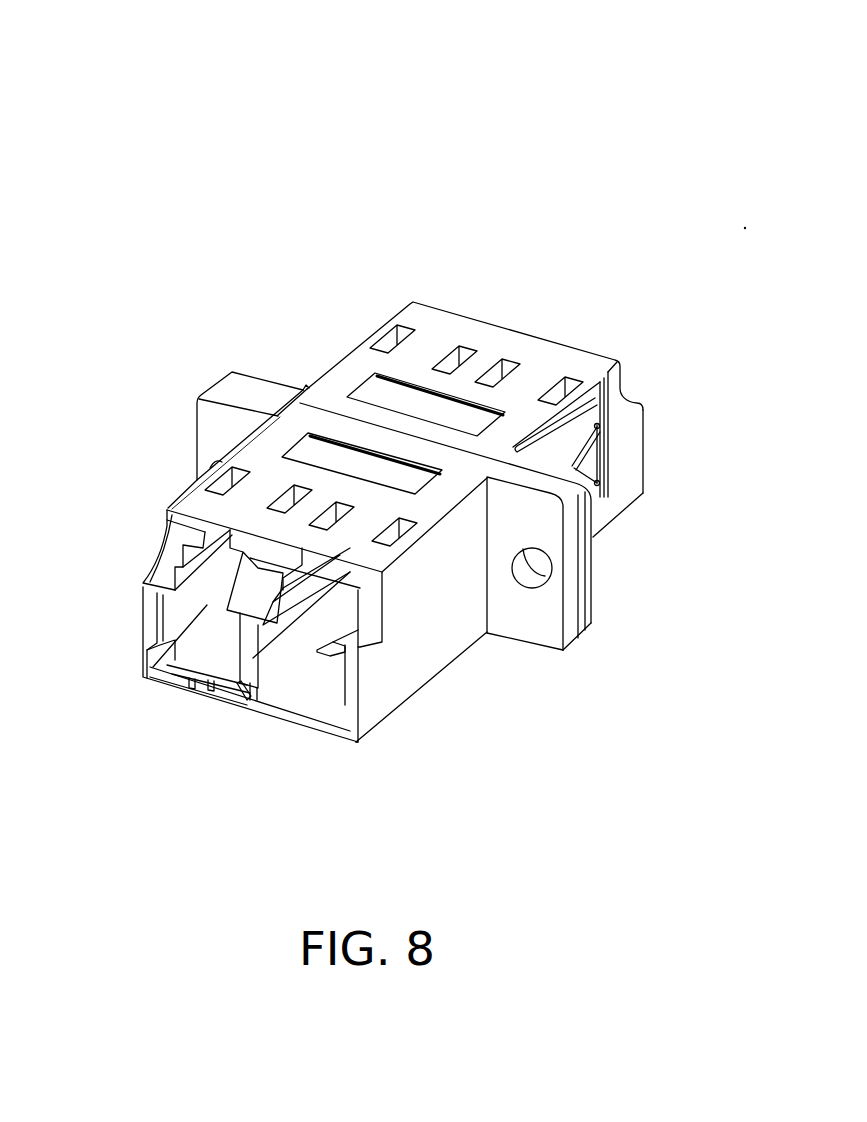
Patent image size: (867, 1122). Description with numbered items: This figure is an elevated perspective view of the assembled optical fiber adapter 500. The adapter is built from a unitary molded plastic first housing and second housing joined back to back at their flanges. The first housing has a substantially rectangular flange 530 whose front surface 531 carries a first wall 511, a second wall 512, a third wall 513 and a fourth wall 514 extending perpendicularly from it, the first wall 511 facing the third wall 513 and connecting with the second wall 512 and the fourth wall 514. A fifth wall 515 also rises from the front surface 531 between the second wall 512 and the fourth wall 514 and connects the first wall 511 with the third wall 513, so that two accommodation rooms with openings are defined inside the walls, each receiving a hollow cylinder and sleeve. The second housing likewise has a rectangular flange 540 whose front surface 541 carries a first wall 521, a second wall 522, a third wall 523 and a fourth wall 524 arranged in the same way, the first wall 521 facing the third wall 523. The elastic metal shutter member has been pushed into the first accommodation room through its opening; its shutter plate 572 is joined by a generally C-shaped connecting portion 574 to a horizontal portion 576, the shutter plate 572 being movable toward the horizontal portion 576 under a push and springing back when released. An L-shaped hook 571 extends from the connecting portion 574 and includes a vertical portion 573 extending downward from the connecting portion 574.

The optical fiber adapter 500 is at (116, 129).
The first wall 511 is at (258, 457).
The second wall 512 is at (148, 600).
The third wall 513 is at (248, 707).
The fourth wall 514 is at (393, 685).
The fifth wall 515 is at (250, 638).
The first wall 521 is at (565, 367).
The second wall 522 is at (632, 473).
The third wall 523 is at (613, 527).
The fourth wall 524 is at (370, 340).
The flange 530 is at (533, 482).
The front surface 531 is at (555, 633).
The flange 540 is at (252, 387).
The front surface 541 is at (278, 380).
The hook 571 is at (190, 697).
The shutter plate 572 is at (222, 586).
The vertical portion 573 is at (198, 690).
The connecting portion 574 is at (165, 679).
The horizontal portion 576 is at (247, 687).